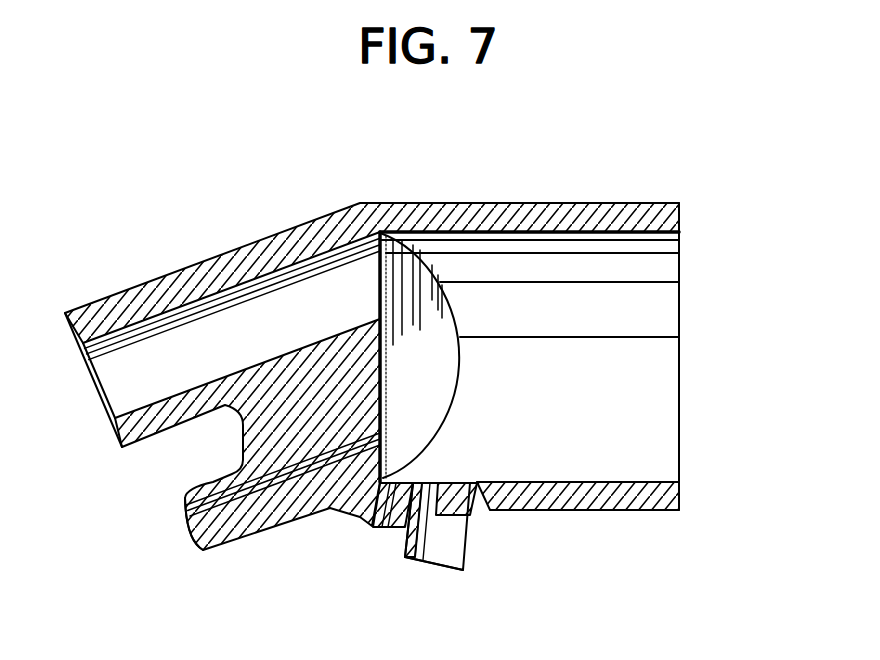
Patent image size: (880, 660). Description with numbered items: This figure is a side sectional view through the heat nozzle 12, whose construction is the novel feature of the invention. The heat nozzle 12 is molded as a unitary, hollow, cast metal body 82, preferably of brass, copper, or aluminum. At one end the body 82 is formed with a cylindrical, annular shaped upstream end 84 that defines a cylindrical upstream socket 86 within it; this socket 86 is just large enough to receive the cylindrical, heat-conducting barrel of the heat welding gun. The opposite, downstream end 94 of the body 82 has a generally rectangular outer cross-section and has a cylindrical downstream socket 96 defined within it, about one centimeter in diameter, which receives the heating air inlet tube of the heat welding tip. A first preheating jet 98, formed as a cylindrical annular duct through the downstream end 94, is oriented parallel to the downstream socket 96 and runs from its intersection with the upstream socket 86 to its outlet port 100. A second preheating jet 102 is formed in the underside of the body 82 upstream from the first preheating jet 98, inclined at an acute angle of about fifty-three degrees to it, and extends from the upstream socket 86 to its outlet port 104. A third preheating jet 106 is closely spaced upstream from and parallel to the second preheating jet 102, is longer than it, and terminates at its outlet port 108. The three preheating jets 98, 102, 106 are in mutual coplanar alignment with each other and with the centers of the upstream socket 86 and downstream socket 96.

The heat nozzle 12 is at (321, 188).
The metal body 82 is at (479, 198).
The upstream end 84 is at (583, 203).
The upstream socket 86 is at (633, 437).
The downstream end 94 is at (167, 276).
The downstream socket 96 is at (283, 318).
The first preheating jet 98 is at (445, 537).
The outlet port 100 is at (430, 560).
The second preheating jet 102 is at (403, 487).
The outlet port 104 is at (383, 533).
The third preheating jet 106 is at (270, 498).
The outlet port 108 is at (187, 507).